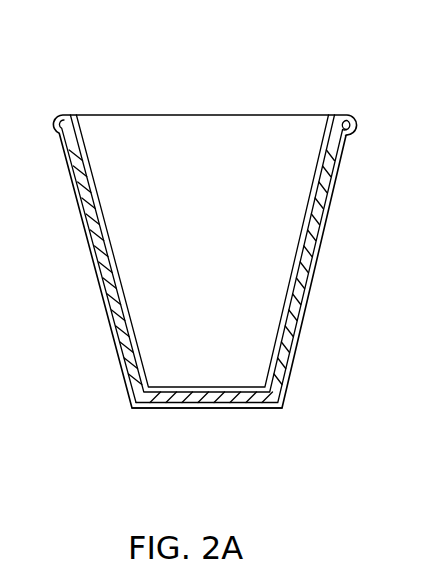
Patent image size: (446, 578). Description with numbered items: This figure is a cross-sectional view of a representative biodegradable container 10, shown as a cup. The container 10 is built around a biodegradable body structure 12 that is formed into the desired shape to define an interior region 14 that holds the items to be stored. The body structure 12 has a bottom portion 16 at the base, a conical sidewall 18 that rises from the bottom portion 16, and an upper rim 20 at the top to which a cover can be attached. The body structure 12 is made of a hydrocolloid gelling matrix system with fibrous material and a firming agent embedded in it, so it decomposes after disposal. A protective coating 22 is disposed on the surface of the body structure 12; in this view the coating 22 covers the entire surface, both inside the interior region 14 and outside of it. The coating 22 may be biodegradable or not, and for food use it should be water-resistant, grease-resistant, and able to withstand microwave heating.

The container 10 is at (217, 248).
The body structure 12 is at (131, 395).
The interior region 14 is at (219, 213).
The bottom portion 16 is at (222, 394).
The conical sidewall 18 is at (104, 272).
The upper rim 20 is at (355, 123).
The protective coating 22 is at (306, 293).